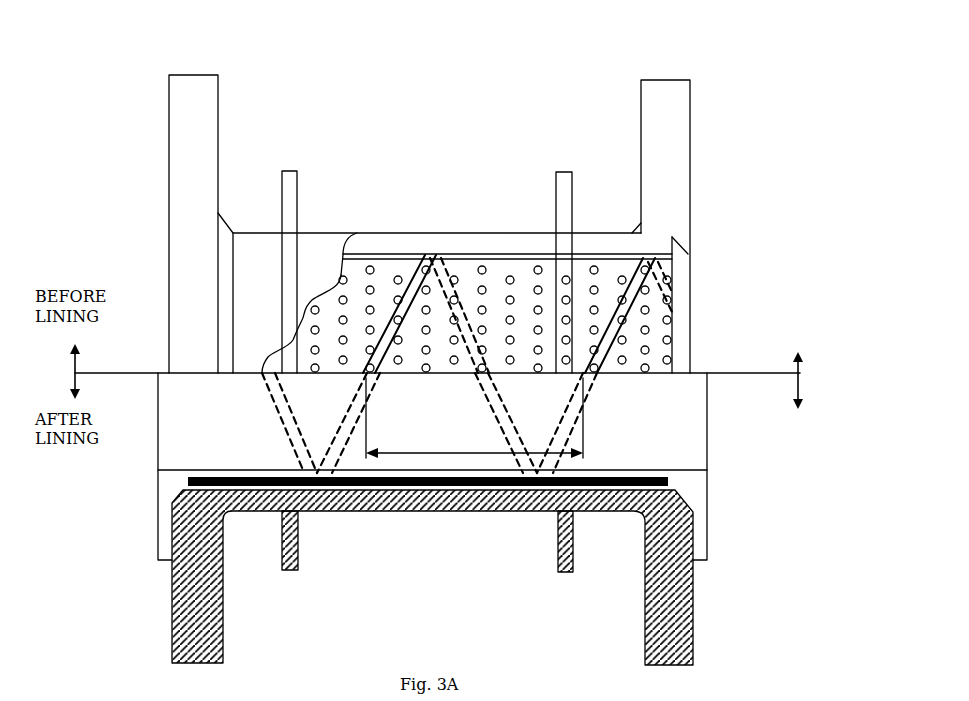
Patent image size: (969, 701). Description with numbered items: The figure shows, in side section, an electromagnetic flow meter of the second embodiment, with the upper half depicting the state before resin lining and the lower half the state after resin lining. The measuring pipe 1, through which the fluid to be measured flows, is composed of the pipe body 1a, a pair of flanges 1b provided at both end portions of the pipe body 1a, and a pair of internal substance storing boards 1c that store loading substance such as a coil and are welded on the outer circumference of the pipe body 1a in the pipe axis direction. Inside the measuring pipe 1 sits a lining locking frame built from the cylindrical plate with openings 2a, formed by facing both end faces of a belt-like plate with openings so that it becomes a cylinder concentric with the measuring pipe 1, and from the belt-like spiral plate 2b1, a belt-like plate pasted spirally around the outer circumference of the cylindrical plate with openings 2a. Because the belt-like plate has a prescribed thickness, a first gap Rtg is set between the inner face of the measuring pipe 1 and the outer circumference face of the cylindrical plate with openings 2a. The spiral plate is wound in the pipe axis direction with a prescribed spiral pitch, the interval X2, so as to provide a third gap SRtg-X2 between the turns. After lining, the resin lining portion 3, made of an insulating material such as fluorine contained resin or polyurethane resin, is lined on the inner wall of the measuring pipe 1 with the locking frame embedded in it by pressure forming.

The measuring pipe 1 is at (438, 146).
The pipe body 1a is at (383, 233).
The flange 1b is at (218, 75).
The internal substance storing board 1c is at (297, 172).
The cylindrical plate with openings 2a is at (480, 255).
The belt-like spiral plate 2b1 is at (625, 317).
The resin lining portion 3 is at (708, 541).
The first gap Rtg is at (680, 261).
The spiral pitch interval X2 is at (474, 418).
The third gap SRtg-X2 is at (265, 497).